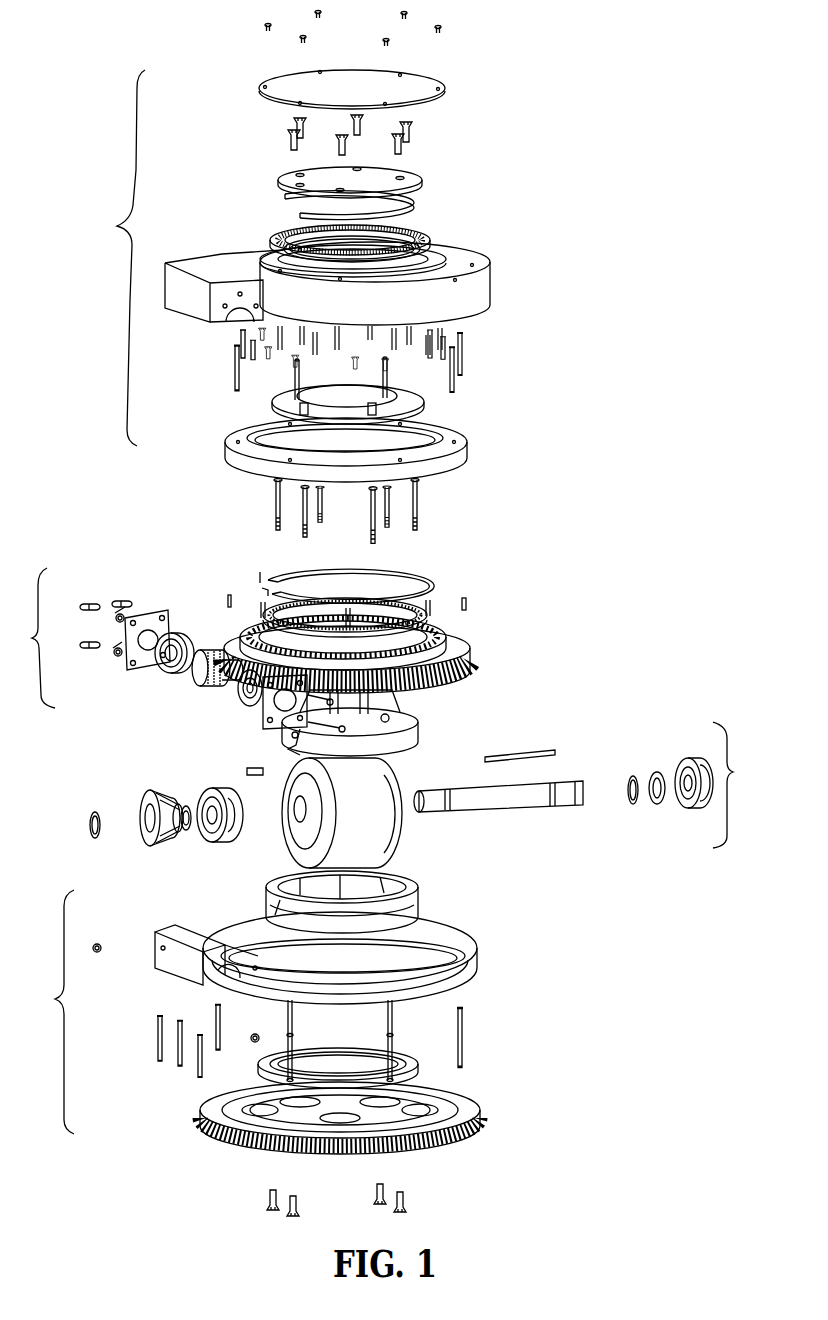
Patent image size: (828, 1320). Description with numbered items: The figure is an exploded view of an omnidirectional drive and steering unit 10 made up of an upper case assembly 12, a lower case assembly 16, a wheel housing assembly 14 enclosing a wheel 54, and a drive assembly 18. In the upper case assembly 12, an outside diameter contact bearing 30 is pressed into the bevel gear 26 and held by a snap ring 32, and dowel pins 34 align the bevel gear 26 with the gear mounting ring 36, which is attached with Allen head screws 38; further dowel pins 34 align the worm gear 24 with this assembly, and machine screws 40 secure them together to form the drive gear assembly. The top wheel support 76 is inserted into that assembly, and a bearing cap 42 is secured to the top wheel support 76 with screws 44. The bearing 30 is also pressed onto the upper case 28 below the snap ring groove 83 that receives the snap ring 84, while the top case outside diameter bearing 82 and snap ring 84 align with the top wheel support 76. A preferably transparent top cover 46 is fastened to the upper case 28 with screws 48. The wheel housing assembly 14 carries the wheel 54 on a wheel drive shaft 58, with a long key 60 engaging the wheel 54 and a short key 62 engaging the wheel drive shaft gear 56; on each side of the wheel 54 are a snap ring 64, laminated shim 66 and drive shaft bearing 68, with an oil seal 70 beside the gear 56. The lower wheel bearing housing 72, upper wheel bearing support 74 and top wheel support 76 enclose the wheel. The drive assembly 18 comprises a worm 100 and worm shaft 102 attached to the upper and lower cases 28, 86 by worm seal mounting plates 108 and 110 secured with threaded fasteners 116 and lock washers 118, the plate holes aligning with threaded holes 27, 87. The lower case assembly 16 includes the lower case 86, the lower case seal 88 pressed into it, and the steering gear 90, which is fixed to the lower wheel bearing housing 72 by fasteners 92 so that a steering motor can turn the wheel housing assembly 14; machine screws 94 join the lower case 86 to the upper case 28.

The omnidirectional drive and steering unit 10 is at (603, 154).
The upper case assembly 12 is at (117, 258).
The wheel housing assembly 14 is at (735, 785).
The lower case assembly 16 is at (53, 1012).
The drive assembly 18 is at (31, 638).
The worm gear 24 is at (470, 662).
The bevel gear 26 is at (444, 638).
The threaded holes 27 is at (226, 308).
The upper case 28 is at (478, 290).
The outside diameter contact bearing 30 is at (428, 602).
The snap ring 32 is at (395, 574).
The dowel pins 34 is at (466, 600).
The gear mounting ring 36 is at (462, 458).
The Allen head screws 38 is at (268, 365).
The machine screws 40 is at (236, 378).
The bearing cap 42 is at (418, 176).
The bearing cap mounting screws 44 is at (412, 141).
The top cover 46 is at (428, 83).
The screws 48 is at (439, 27).
The wheel 54 is at (378, 828).
The wheel drive shaft gear 56 is at (150, 838).
The wheel drive shaft 58 is at (528, 805).
The long key 60 is at (520, 749).
The short key 62 is at (250, 771).
The snap ring 64 is at (628, 786).
The laminated shim 66 is at (652, 802).
The drive shaft bearing 68 is at (688, 806).
The oil seal 70 is at (190, 832).
The lower wheel bearing housing 72 is at (410, 897).
The upper wheel bearing support 74 is at (416, 728).
The top wheel support 76 is at (410, 410).
The top case outside diameter bearing 82 is at (428, 243).
The snap ring groove 83 is at (283, 248).
The snap ring 84 is at (430, 202).
The lower case 86 is at (468, 958).
The threaded holes 87 is at (218, 968).
The lower case seal 88 is at (412, 1062).
The steering gear 90 is at (474, 1116).
The fasteners 92 is at (410, 1196).
The machine screws 94 is at (467, 1052).
The worm 100 is at (210, 684).
The worm shaft 102 is at (170, 665).
The worm seal mounting plate 108 is at (130, 668).
The worm seal mounting plate 110 is at (265, 716).
The threaded fasteners 116 is at (86, 605).
The lock washers 118 is at (112, 656).